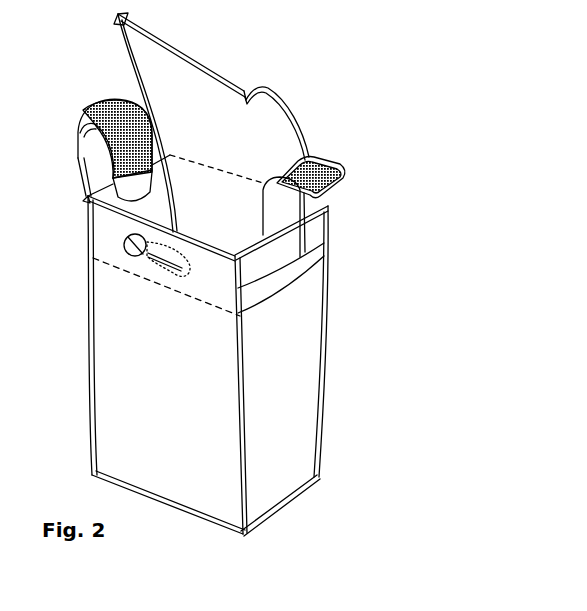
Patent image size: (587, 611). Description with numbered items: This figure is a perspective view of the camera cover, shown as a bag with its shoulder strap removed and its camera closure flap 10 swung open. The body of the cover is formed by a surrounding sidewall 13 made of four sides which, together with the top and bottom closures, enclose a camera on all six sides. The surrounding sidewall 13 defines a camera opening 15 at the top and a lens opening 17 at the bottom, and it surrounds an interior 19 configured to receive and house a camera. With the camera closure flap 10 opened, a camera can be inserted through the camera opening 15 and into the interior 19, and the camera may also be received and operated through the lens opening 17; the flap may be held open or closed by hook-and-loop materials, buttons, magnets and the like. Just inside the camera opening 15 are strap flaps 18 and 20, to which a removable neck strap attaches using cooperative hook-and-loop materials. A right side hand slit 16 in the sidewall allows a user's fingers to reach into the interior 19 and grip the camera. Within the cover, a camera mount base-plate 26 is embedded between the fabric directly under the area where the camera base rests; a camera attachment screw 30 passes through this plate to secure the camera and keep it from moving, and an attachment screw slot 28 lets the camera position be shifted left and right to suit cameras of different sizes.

The camera closure flap 10 is at (195, 52).
The surrounding sidewall 13 is at (280, 417).
The camera opening 15 is at (281, 226).
The right side hand slit 16 is at (285, 274).
The lens opening 17 is at (283, 502).
The strap flap 18 is at (110, 138).
The interior 19 is at (212, 194).
The strap flap 20 is at (285, 197).
The camera mount base-plate 26 is at (210, 283).
The attachment screw track, or slot 28 is at (162, 260).
The camera attachment screw 30 is at (124, 247).